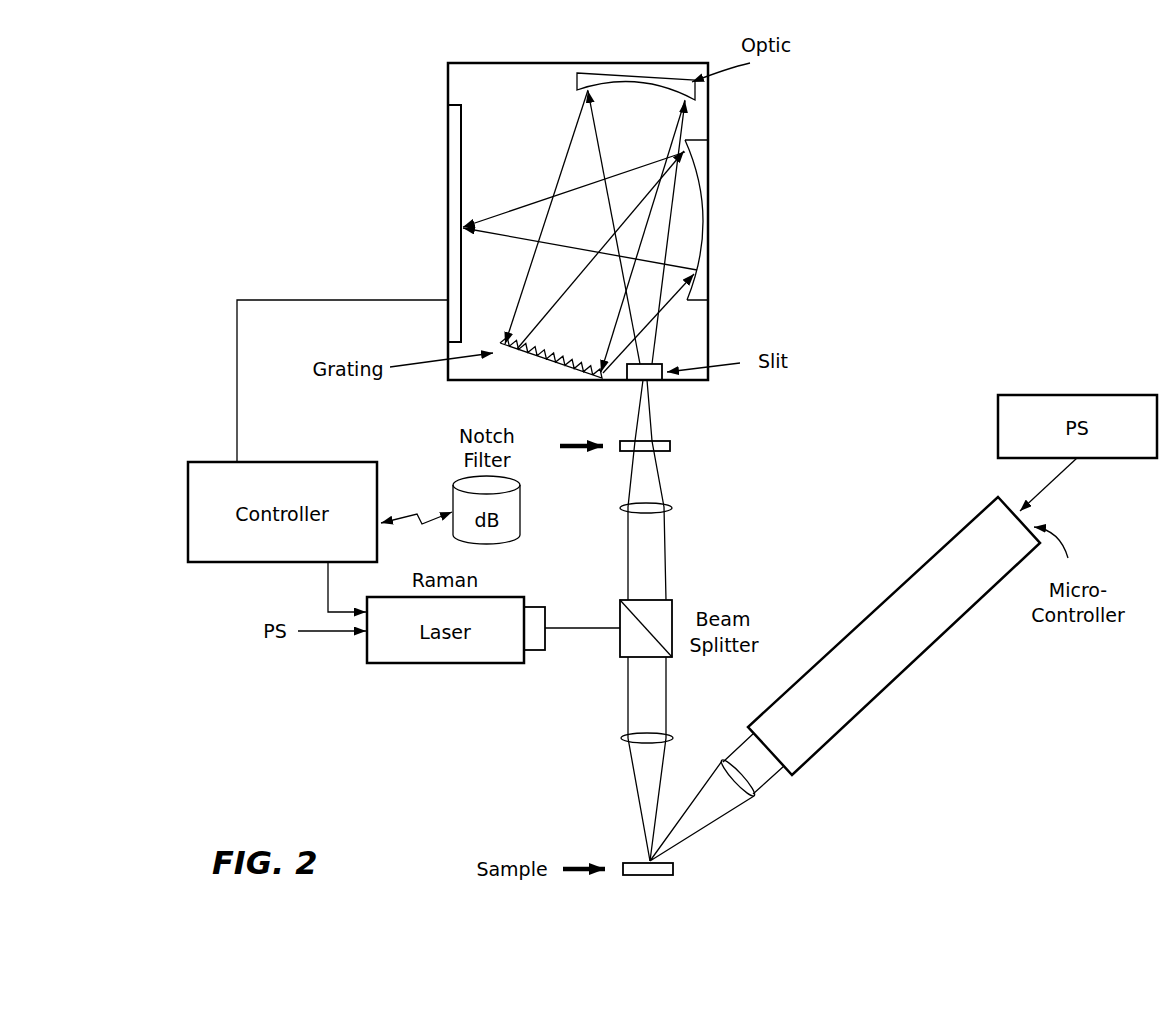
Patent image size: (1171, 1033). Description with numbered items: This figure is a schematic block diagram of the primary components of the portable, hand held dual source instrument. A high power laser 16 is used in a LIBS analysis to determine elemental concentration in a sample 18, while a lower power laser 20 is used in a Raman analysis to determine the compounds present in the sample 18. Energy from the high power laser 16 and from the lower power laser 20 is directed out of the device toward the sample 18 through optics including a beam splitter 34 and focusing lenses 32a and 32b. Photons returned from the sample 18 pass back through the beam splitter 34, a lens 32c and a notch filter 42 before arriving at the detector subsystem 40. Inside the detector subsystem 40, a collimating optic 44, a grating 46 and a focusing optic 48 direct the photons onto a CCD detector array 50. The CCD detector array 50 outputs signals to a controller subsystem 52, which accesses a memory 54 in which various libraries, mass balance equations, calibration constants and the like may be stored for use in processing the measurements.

The detector subsystem 40 is at (447, 63).
The collimating optic 44 is at (577, 79).
The focusing optic 48 is at (711, 182).
The CCD detector array 50 is at (442, 193).
The grating 46 is at (522, 362).
The notch filter 42 is at (672, 446).
The lens 32c is at (672, 508).
The beam splitter 34 is at (674, 609).
The focusing lens 32b is at (672, 738).
The focusing lens 32a is at (755, 798).
The sample 18 is at (675, 869).
The high power laser 16 is at (917, 660).
The controller subsystem 52 is at (310, 462).
The memory 54 is at (522, 511).
The lower power laser 20 is at (437, 663).